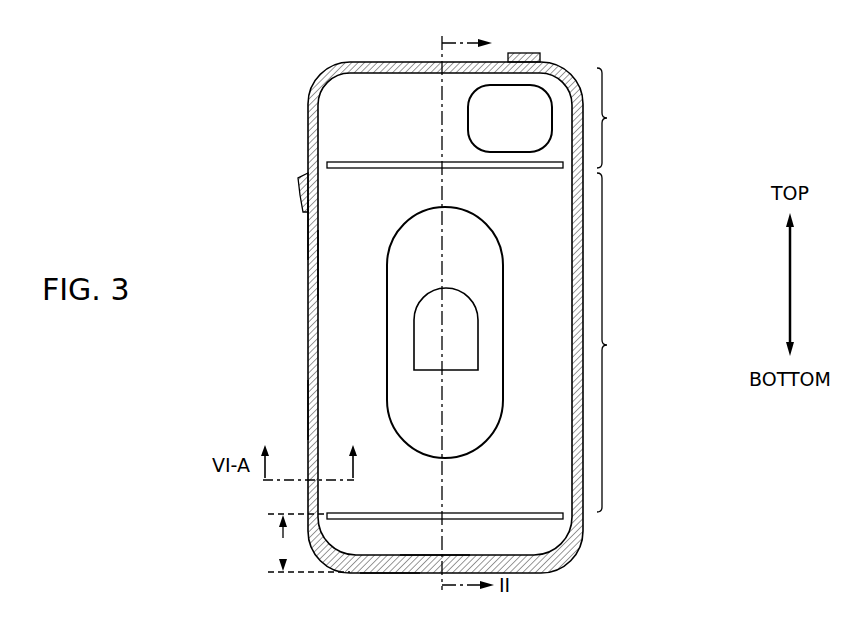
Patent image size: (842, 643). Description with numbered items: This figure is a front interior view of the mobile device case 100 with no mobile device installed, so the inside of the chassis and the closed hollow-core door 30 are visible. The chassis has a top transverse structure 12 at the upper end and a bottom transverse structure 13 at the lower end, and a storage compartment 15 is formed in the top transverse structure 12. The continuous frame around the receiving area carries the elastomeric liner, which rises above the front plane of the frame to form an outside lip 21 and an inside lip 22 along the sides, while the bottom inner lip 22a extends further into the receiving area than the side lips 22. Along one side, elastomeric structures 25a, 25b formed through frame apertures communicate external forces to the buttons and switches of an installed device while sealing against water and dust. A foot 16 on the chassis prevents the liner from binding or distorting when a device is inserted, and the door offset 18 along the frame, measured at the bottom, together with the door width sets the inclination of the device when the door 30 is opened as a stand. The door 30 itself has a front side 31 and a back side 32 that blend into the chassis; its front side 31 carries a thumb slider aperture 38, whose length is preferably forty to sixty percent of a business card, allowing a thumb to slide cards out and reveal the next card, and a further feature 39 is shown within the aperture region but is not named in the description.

The mobile device case 100 is at (83, 126).
The top transverse structure 12 is at (618, 118).
The hollow-core door 30 is at (621, 342).
The storage compartment 15 is at (358, 132).
The coupling structure 25a is at (543, 57).
The coupling structure 25b is at (300, 180).
The bottom transverse structure 13 is at (530, 541).
The inside lip 22 is at (313, 226).
The outside lip 21 is at (313, 412).
The front side 31 is at (340, 259).
The back side 32 is at (405, 288).
The thumb slider aperture 38 is at (386, 370).
The hole 39 is at (431, 327).
The bottom inner lip 22a is at (385, 561).
The foot 16 is at (432, 561).
The door offset 18 is at (309, 543).